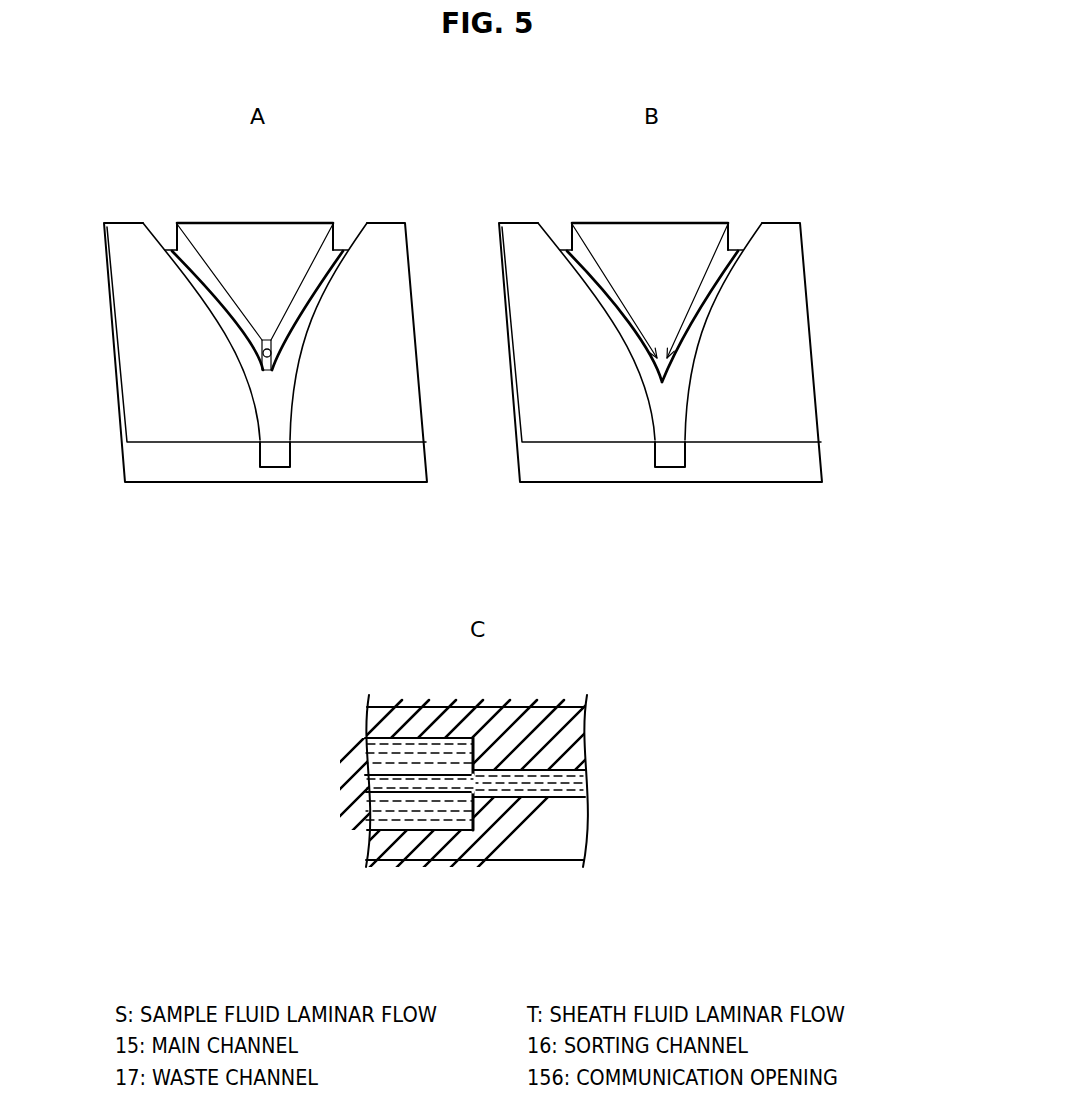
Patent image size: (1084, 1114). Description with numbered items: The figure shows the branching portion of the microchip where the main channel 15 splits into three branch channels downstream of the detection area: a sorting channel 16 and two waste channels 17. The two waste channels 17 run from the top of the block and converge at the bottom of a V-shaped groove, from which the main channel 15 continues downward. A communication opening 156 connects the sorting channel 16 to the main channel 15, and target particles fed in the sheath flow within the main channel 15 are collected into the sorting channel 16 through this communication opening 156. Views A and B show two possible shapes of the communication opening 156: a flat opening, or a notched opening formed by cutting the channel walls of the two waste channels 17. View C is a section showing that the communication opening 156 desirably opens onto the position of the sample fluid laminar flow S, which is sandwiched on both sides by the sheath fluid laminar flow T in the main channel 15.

The main channel 15 is at (273, 401).
The sorting channel 16 is at (598, 770).
The waste channel 17 is at (205, 287).
The communication opening 156 is at (271, 362).
The sample fluid laminar flow S is at (398, 782).
The sheath fluid laminar flow T is at (433, 750).